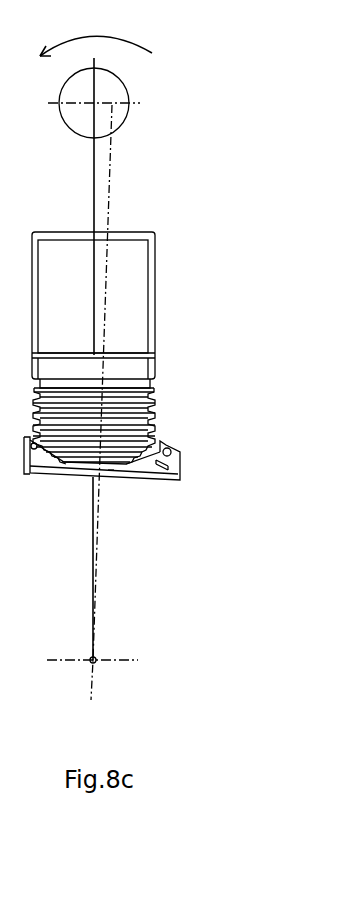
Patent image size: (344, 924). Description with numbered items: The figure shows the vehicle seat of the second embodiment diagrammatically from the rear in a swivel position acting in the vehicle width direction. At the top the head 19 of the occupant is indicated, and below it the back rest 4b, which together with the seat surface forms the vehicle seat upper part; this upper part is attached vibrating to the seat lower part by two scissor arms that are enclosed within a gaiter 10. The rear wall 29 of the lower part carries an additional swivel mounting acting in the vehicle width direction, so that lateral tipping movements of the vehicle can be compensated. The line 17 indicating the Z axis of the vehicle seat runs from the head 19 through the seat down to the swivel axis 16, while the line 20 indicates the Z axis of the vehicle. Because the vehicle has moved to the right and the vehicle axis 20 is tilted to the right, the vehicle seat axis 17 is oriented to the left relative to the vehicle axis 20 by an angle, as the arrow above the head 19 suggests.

The head 19 is at (106, 87).
The line indicating a Z axis of the vehicle seat 17 is at (94, 160).
The line indicating a Z axis of the vehicle 20 is at (112, 174).
The back rest 4b is at (128, 295).
The gaiter 10 is at (137, 406).
The rear wall of the lower part 29 is at (67, 467).
The swivel axis 16 is at (96, 657).